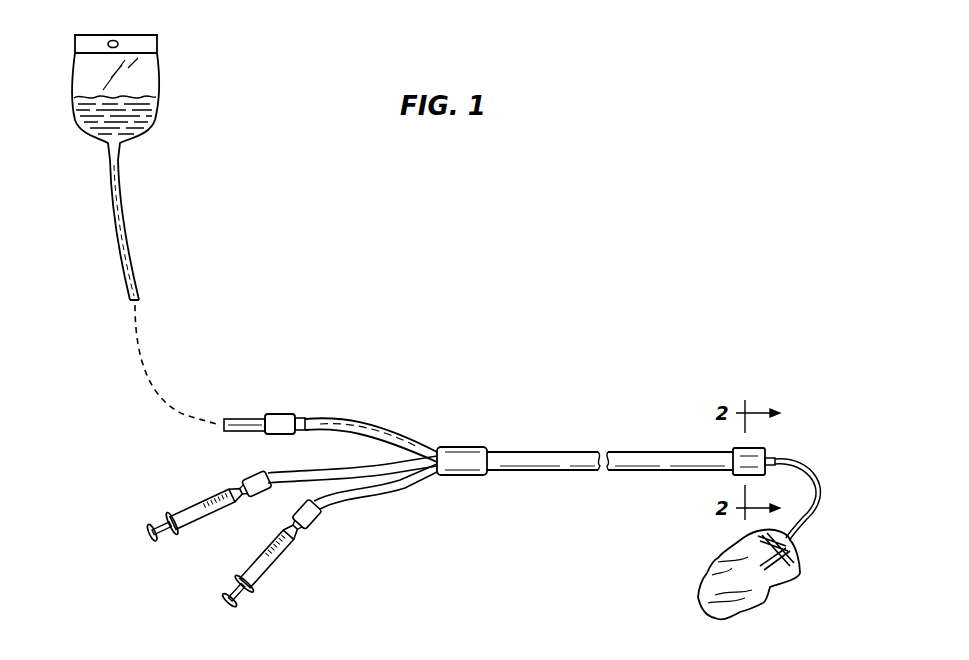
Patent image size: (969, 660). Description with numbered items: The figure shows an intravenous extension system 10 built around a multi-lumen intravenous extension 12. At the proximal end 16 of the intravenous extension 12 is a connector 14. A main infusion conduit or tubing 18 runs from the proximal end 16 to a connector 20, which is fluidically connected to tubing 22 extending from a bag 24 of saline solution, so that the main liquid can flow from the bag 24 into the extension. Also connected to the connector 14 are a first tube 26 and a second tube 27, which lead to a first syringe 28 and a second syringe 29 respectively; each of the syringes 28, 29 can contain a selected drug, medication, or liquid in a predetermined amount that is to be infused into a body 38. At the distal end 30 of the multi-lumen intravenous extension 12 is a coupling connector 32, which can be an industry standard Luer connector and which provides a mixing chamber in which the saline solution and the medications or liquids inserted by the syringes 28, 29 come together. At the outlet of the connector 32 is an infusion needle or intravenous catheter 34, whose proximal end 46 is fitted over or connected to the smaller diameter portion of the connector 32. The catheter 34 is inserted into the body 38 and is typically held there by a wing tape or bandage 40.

The intravenous extension system 10 is at (538, 352).
The multi-lumen intravenous extension 12 is at (650, 472).
The connector 14 is at (462, 476).
The proximal end 16 is at (537, 456).
The main infusion conduit or tubing 18 is at (362, 430).
The connector 20 is at (278, 413).
The tubing 22 is at (130, 228).
The bag 24 is at (157, 70).
The first tube 26 is at (375, 498).
The second tube 27 is at (322, 470).
The first syringe 28 is at (267, 570).
The second syringe 29 is at (185, 505).
The distal end 30 is at (728, 469).
The coupling connector 32 is at (762, 455).
The infusion needle or intravenous catheter 34 is at (828, 497).
The body 38 is at (768, 600).
The wing tape or bandage 40 is at (797, 553).
The proximal end 46 is at (775, 460).